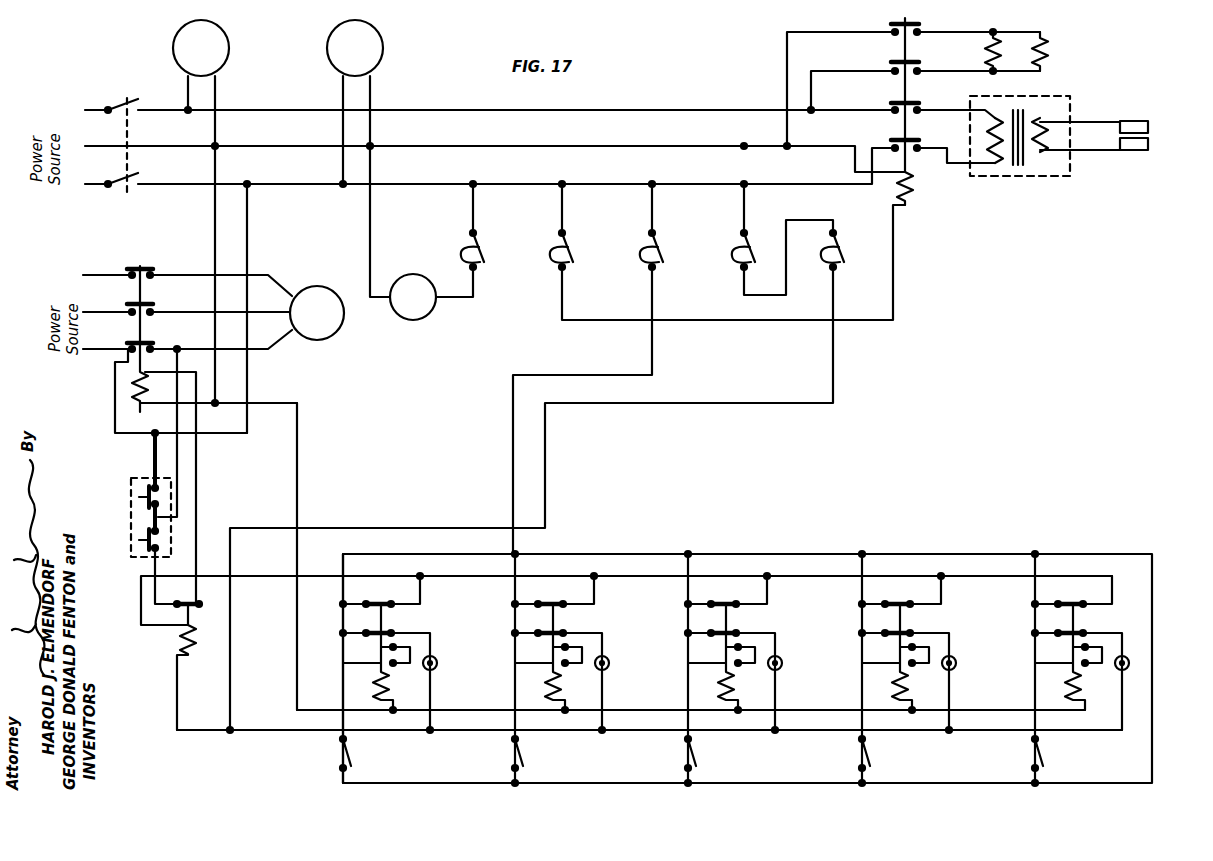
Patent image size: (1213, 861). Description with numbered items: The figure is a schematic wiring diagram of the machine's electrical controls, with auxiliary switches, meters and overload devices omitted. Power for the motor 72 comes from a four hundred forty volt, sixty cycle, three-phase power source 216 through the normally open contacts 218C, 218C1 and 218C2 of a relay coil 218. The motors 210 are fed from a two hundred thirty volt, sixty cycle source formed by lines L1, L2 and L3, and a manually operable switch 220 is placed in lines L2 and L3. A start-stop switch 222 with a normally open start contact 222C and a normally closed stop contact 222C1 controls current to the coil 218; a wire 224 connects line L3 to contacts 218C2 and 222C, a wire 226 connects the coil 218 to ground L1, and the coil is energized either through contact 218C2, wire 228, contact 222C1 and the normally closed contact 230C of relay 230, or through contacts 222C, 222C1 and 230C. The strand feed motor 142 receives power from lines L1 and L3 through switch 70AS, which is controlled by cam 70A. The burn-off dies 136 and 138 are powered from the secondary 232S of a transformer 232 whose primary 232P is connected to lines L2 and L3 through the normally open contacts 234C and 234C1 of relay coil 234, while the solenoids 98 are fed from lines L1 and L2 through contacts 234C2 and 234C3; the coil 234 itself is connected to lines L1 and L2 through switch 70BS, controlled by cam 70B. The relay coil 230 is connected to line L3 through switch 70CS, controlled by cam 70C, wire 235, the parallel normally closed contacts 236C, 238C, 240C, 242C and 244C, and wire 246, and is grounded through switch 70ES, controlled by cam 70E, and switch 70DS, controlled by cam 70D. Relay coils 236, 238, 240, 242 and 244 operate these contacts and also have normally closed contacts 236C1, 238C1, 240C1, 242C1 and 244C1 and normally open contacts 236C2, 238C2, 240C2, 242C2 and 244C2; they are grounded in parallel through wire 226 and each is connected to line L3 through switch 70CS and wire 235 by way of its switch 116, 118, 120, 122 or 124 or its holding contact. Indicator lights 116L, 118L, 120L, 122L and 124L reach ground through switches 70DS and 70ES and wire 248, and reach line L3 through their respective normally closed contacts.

The power source line L1 is at (91, 147).
The power source line L2 is at (92, 109).
The power source line L3 is at (93, 188).
The motors 210 is at (229, 42).
The manually operable switch 220 is at (128, 196).
The wire 226 is at (213, 222).
The wire 224 is at (249, 245).
The power source 216 is at (83, 275).
The normally open contact 218C is at (150, 272).
The normally open contact 218C1 is at (150, 308).
The normally open contact 218C2 is at (150, 347).
The relay coil 218 is at (130, 389).
The motor 72 is at (336, 331).
The cam 70A is at (462, 250).
The switch 70AS is at (478, 267).
The strand feed motor 142 is at (428, 320).
The cam 70B is at (550, 250).
The switch 70BS is at (567, 267).
The cam 70C is at (643, 250).
The switch 70CS is at (657, 267).
The cam 70D is at (738, 250).
The switch 70DS is at (743, 268).
The cam 70E is at (830, 250).
The switch 70ES is at (838, 267).
The wire 235 is at (512, 466).
The wire 248 is at (677, 405).
The normally open contact 234C3 is at (892, 30).
The normally open contact 234C2 is at (892, 70).
The normally open contact 234C is at (890, 110).
The normally open contact 234C1 is at (920, 143).
The relay coil 234 is at (915, 190).
The solenoids 98 is at (1035, 36).
The transformer 232 is at (1073, 98).
The primary 232P is at (995, 168).
The secondary 232S is at (1042, 155).
The burn-off die 136 is at (1135, 120).
The burn-off die 138 is at (1132, 150).
The normally open start contact 222C is at (150, 484).
The start-stop switch 222 is at (130, 518).
The normally closed stop contact 222C1 is at (149, 560).
The wire 228 is at (178, 466).
The normally closed contact 230C is at (203, 603).
The relay coil 230 is at (179, 648).
The wire 246 is at (478, 576).
The switch 116 is at (352, 757).
The normally closed contact 236C is at (384, 596).
The normally closed contact 236C1 is at (392, 630).
The normally open contact 236C2 is at (368, 663).
The relay coil 236 is at (391, 693).
The indicator light 116L is at (437, 668).
The switch 118 is at (524, 757).
The normally closed contact 238C is at (556, 596).
The normally closed contact 238C1 is at (564, 630).
The normally open contact 238C2 is at (540, 663).
The relay coil 238 is at (563, 693).
The indicator light 118L is at (609, 668).
The switch 120 is at (697, 757).
The normally closed contact 240C is at (729, 596).
The normally closed contact 240C1 is at (737, 630).
The normally open contact 240C2 is at (713, 663).
The relay coil 240 is at (736, 693).
The indicator light 120L is at (782, 668).
The switch 122 is at (871, 757).
The normally closed contact 242C is at (903, 596).
The normally closed contact 242C1 is at (911, 630).
The normally open contact 242C2 is at (887, 663).
The relay coil 242 is at (910, 693).
The indicator light 122L is at (956, 668).
The switch 124 is at (1044, 757).
The normally closed contact 244C is at (1076, 596).
The normally closed contact 244C1 is at (1084, 630).
The normally open contact 244C2 is at (1060, 663).
The relay coil 244 is at (1083, 696).
The indicator light 124L is at (1129, 668).